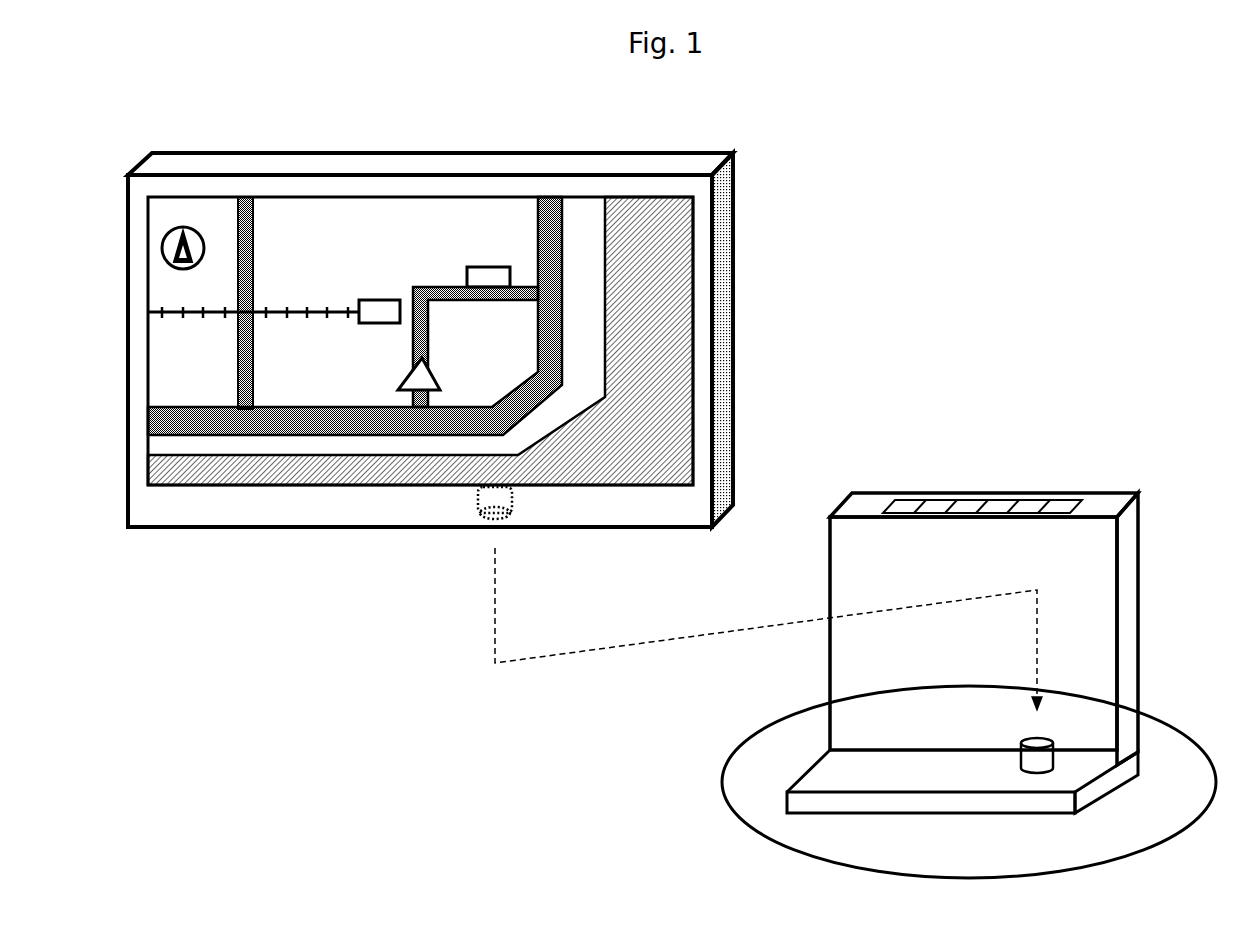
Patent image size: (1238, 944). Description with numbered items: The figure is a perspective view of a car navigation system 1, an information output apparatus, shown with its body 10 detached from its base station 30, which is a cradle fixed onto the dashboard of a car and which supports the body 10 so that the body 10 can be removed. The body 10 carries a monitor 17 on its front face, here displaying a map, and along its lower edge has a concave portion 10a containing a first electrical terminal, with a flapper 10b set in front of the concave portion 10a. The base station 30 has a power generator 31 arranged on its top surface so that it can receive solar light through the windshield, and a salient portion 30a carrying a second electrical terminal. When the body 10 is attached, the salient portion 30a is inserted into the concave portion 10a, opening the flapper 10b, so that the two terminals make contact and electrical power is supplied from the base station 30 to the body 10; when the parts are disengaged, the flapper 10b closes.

The car navigation system 1 is at (1068, 216).
The body 10 is at (734, 153).
The concave portion 10a is at (512, 505).
The flapper 10b is at (500, 517).
The monitor 17 is at (146, 195).
The base station 30 is at (1138, 493).
The salient portion 30a is at (1048, 742).
The power generator 31 is at (892, 503).